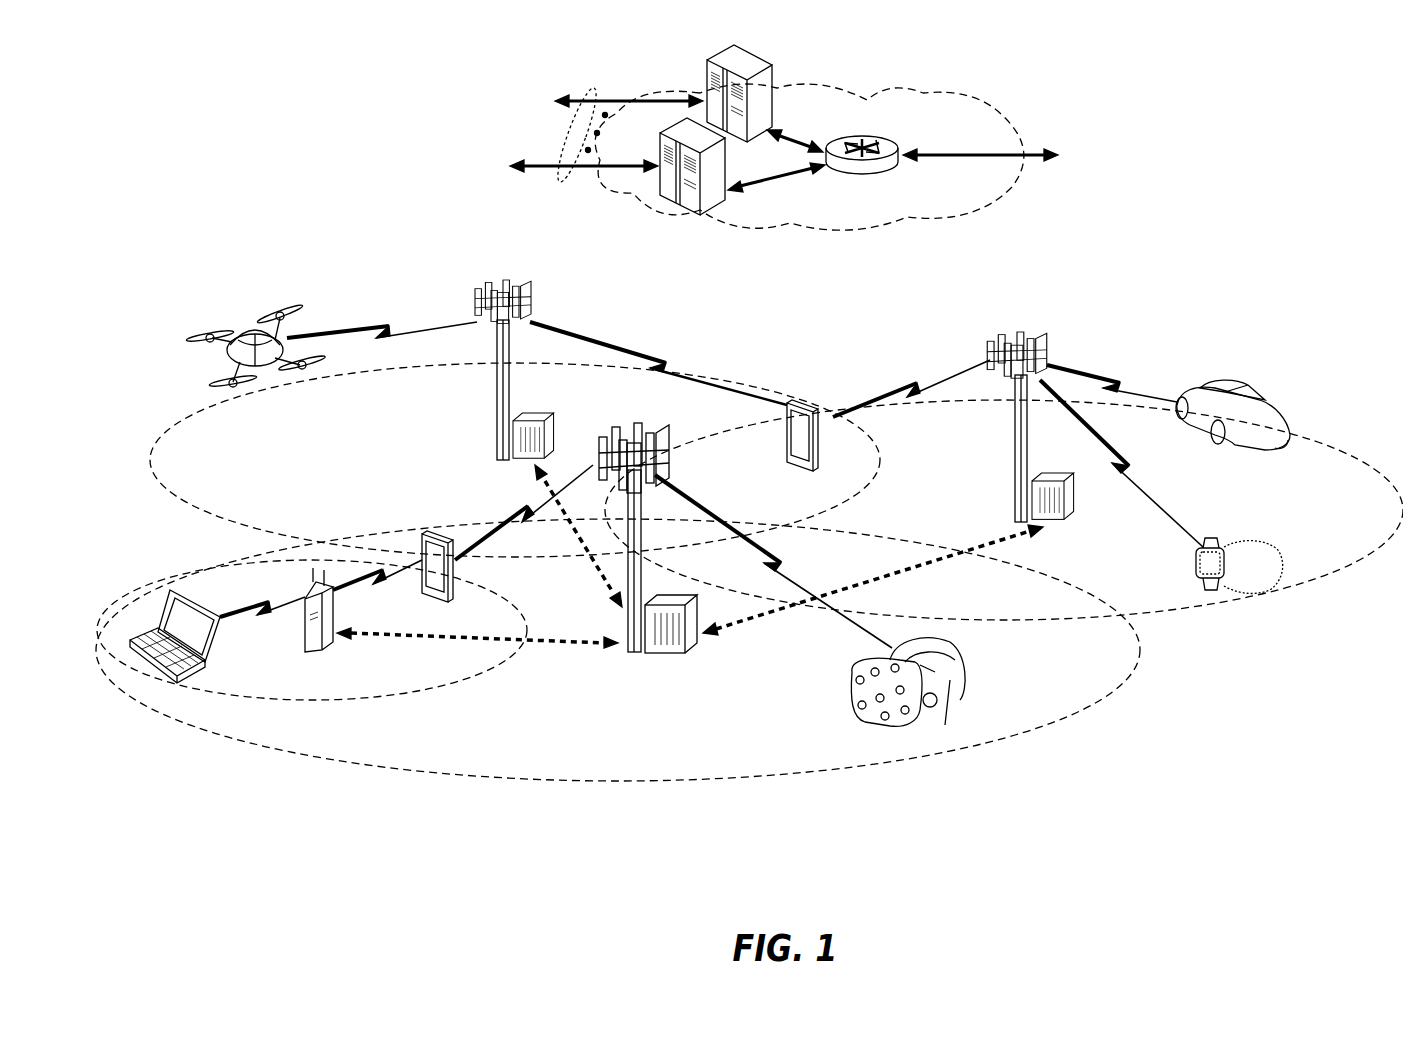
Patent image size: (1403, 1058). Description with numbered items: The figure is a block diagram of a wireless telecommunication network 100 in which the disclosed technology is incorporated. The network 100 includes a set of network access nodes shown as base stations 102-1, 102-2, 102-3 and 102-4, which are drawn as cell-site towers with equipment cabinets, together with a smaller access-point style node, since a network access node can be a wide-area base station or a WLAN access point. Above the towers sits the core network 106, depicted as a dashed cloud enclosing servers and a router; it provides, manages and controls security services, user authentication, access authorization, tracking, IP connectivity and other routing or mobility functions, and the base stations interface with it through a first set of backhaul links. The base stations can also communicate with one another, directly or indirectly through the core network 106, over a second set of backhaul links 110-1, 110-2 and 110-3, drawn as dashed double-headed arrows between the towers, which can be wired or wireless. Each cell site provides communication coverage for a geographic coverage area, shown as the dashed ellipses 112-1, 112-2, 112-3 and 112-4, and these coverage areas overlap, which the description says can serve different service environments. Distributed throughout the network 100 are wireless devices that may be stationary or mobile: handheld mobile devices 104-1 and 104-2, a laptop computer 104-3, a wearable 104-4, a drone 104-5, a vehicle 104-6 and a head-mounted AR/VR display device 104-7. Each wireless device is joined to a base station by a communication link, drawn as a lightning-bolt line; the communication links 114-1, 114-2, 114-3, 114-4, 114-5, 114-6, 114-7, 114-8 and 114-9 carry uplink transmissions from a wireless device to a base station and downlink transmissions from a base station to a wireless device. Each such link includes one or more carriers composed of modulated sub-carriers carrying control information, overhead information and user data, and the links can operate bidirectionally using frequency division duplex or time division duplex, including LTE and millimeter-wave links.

The wireless telecommunication network 100 is at (1303, 150).
The core network 106 is at (928, 222).
The base station 102-1 is at (630, 653).
The base station 102-2 is at (492, 405).
The base station 102-3 is at (1012, 440).
The base station 102-4 is at (305, 642).
The wireless device 104-1 is at (456, 580).
The wireless device 104-2 is at (785, 440).
The wireless device 104-3 is at (157, 680).
The wireless device 104-4 is at (1215, 545).
The wireless device 104-5 is at (265, 370).
The wireless device 104-6 is at (1255, 390).
The wireless device 104-7 is at (965, 680).
The backhaul link 110-1 is at (375, 638).
The backhaul link 110-2 is at (935, 562).
The backhaul link 110-3 is at (593, 560).
The geographic coverage area 112-1 is at (560, 782).
The geographic coverage area 112-2 is at (437, 692).
The geographic coverage area 112-3 is at (198, 517).
The geographic coverage area 112-4 is at (1295, 438).
The communication link 114-1 is at (790, 565).
The communication link 114-2 is at (518, 507).
The communication link 114-3 is at (230, 613).
The communication link 114-4 is at (382, 580).
The communication link 114-5 is at (380, 320).
The communication link 114-6 is at (660, 358).
The communication link 114-7 is at (905, 380).
The communication link 114-8 is at (1140, 490).
The communication link 114-9 is at (1108, 368).